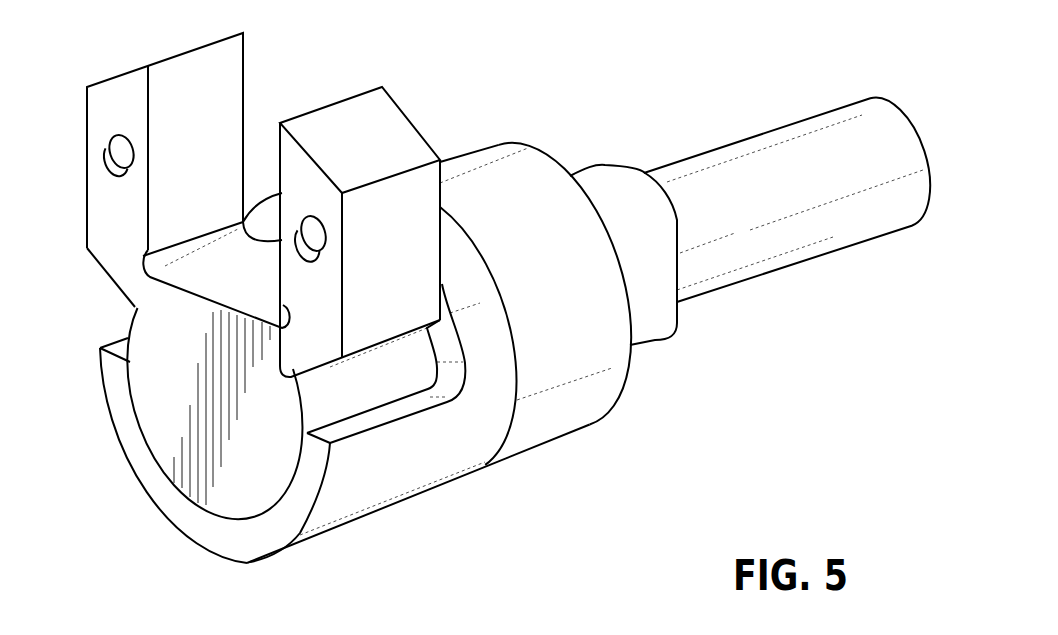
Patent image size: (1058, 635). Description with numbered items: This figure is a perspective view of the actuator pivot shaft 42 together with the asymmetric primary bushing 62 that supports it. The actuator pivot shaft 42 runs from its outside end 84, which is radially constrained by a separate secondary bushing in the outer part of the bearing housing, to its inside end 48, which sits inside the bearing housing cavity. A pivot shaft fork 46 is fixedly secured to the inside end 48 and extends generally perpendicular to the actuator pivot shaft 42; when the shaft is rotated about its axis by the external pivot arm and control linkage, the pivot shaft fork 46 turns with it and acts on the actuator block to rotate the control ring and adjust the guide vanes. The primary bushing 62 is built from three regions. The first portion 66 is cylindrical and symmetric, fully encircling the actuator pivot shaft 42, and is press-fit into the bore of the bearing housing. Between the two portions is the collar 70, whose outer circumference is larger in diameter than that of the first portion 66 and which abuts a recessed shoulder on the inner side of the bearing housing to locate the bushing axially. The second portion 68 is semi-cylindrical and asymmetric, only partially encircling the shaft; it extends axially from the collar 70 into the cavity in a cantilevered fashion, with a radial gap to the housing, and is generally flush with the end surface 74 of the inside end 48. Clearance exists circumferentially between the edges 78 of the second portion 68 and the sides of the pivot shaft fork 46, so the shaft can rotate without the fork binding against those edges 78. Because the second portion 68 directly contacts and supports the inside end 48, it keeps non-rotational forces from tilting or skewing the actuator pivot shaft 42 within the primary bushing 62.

The actuator pivot shaft 42 is at (607, 177).
The pivot shaft fork 46 is at (113, 113).
The inside end 48 is at (327, 412).
The primary bushing 62 is at (562, 435).
The first portion 66 is at (610, 359).
The second portion 68 is at (352, 513).
The collar 70 is at (470, 260).
The end surface 74 is at (163, 435).
The edges 78 is at (118, 347).
The outside end 84 is at (820, 233).